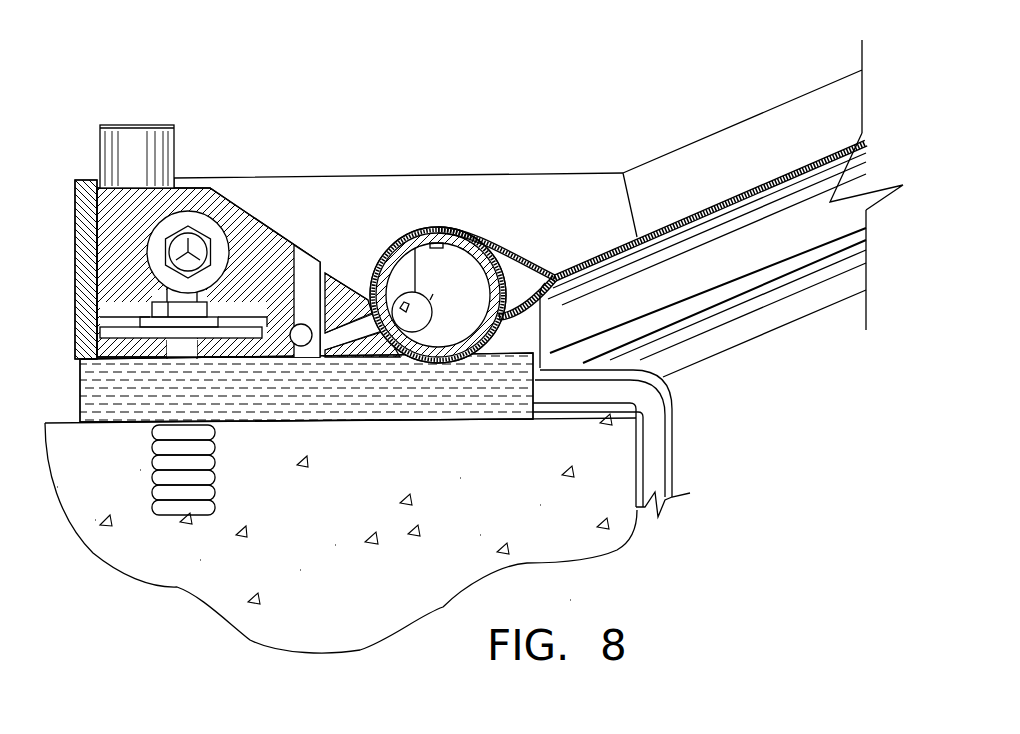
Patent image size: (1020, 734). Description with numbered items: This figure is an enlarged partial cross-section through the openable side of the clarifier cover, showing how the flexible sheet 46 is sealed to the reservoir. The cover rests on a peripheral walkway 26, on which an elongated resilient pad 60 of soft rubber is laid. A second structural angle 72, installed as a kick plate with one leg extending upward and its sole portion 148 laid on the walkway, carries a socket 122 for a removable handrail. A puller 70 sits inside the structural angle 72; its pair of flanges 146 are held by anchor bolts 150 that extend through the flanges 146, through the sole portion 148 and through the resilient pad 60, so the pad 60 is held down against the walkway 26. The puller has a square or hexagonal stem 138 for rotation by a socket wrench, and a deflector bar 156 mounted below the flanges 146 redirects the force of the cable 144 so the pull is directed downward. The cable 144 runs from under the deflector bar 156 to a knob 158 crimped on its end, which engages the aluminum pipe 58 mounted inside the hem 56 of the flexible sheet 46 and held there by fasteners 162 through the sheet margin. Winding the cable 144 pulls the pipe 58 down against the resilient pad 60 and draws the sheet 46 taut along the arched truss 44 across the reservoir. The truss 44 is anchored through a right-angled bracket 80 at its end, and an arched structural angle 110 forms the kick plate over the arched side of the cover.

The peripheral walkway 26 is at (93, 547).
The truss 44 is at (793, 325).
The flexible sheet 46 is at (702, 210).
The hem 56 is at (508, 262).
The pipe 58 is at (535, 275).
The resilient pad 60 is at (275, 397).
The puller 70 is at (248, 318).
The second structural angle 72 is at (73, 186).
The right-angled bracket 80 is at (672, 437).
The arched structural angle 110 is at (783, 100).
The socket 122 is at (135, 123).
The square or hexagonal stem 138 is at (200, 228).
The cable 144 is at (335, 323).
The flange 146 is at (296, 324).
The sole portion 148 is at (127, 360).
The anchor bolt 150 is at (187, 520).
The deflector bar 156 is at (304, 252).
The knob 158 is at (410, 227).
The fastener 162 is at (440, 222).